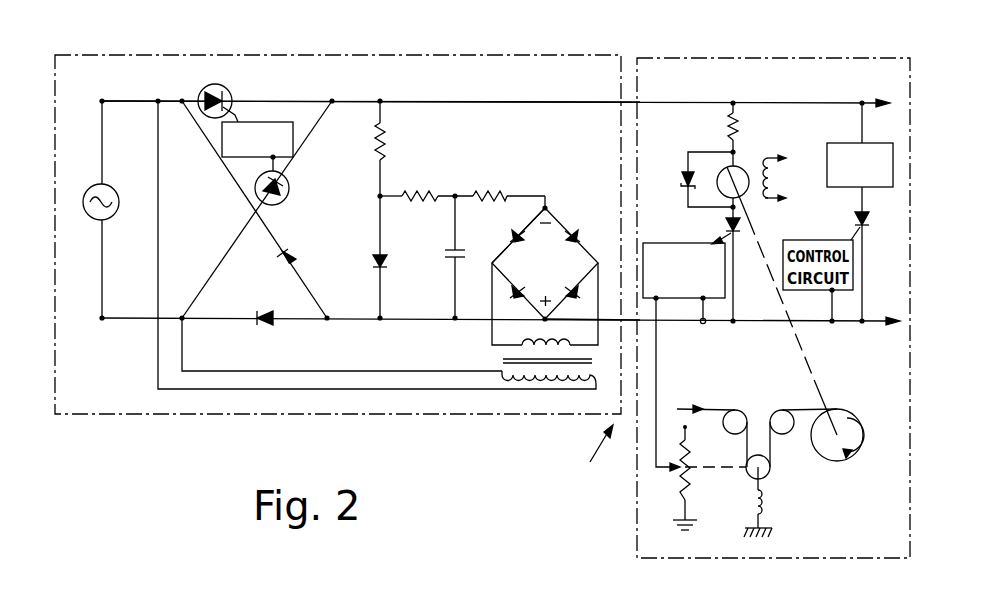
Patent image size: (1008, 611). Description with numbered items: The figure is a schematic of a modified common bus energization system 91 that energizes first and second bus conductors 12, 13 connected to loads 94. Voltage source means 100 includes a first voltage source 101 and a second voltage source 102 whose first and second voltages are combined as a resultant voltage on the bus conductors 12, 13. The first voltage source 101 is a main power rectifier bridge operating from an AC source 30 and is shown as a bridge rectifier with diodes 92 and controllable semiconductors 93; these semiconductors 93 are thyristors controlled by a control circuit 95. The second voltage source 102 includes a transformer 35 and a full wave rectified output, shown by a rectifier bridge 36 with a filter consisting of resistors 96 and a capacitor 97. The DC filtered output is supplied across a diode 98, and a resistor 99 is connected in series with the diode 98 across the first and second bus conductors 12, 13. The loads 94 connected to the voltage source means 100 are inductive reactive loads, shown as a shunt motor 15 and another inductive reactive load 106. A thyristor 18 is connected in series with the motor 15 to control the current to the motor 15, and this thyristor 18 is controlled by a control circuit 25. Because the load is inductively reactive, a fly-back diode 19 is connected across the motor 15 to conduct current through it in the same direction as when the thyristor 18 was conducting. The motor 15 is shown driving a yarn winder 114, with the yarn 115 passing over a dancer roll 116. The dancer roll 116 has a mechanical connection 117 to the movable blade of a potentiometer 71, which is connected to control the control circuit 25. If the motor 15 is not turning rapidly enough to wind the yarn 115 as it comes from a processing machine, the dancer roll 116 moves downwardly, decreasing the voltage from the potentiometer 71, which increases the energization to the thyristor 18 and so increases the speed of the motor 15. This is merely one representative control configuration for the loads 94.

The voltage source means 100 is at (497, 55).
The loads 94 is at (772, 57).
The common bus energization system 91 is at (585, 469).
The first bus conductor 12 is at (517, 101).
The second bus conductor 13 is at (607, 318).
The AC source 30 is at (94, 221).
The controllable semiconductors 93 is at (228, 88).
The control circuit 95 is at (270, 122).
The first voltage source 101 is at (322, 241).
The diodes 92 is at (258, 311).
The resistor 99 is at (388, 141).
The resistors 96 is at (494, 182).
The diode 98 is at (385, 252).
The capacitor 97 is at (446, 262).
The second voltage source 102 is at (506, 238).
The rectifier bridge 36 is at (558, 276).
The transformer 35 is at (505, 359).
The shunt motor 15 is at (742, 168).
The fly-back diode 19 is at (680, 178).
The thyristor 18 is at (722, 223).
The control circuit 25 is at (660, 242).
The inductive reactive load 106 is at (870, 118).
The yarn winder 114 is at (838, 418).
The yarn 115 is at (716, 408).
The dancer roll 116 is at (771, 473).
The potentiometer 71 is at (692, 452).
The mechanical connection 117 is at (713, 470).